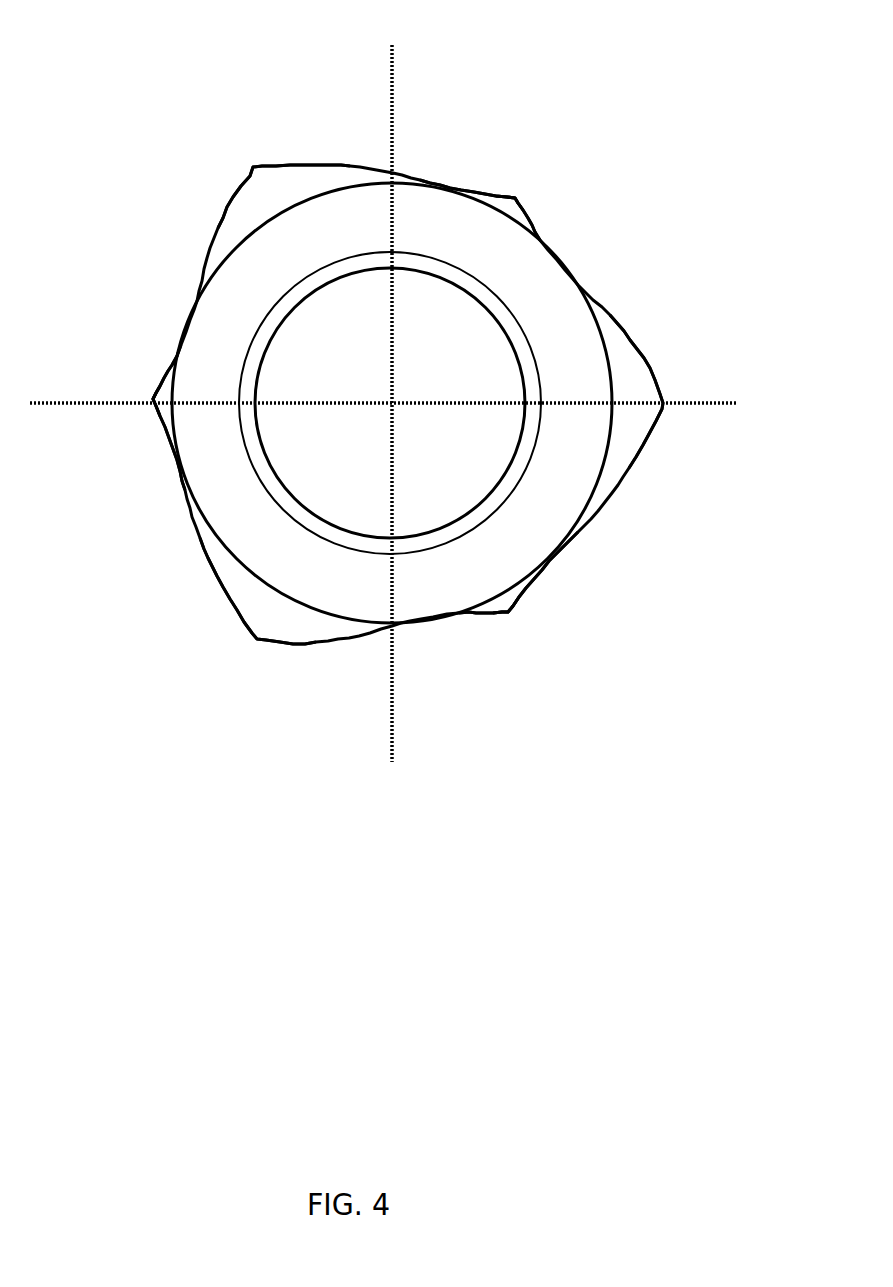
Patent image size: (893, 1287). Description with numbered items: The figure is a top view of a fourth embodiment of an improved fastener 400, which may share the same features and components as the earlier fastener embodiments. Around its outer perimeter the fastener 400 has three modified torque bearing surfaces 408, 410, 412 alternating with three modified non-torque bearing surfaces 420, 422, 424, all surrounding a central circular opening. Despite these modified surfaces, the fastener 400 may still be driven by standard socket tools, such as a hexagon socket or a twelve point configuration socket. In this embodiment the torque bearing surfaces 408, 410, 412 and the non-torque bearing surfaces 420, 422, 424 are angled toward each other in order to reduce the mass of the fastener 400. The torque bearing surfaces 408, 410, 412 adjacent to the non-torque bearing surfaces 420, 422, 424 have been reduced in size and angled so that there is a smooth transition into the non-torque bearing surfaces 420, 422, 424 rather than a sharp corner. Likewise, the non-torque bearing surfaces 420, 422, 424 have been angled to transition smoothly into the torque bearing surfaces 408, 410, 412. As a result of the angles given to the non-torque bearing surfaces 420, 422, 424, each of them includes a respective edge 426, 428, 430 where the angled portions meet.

The fastener 400 is at (110, 97).
The torque bearing surface 408 is at (313, 163).
The torque bearing surface 410 is at (645, 348).
The torque bearing surface 412 is at (310, 643).
The non-torque bearing surface 420 is at (472, 183).
The non-torque bearing surface 422 is at (472, 620).
The non-torque bearing surface 424 is at (170, 438).
The edge 426 is at (518, 190).
The edge 428 is at (515, 613).
The edge 430 is at (155, 410).